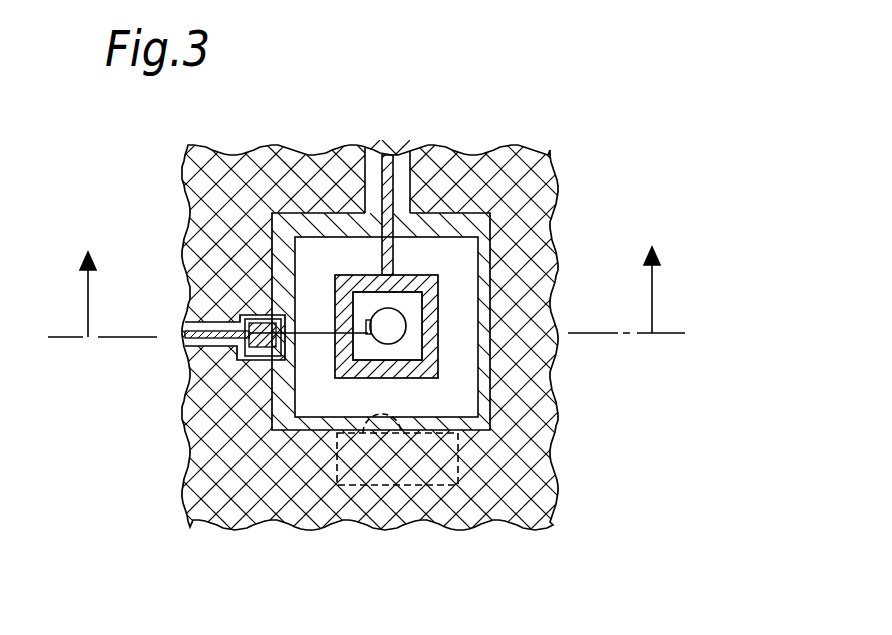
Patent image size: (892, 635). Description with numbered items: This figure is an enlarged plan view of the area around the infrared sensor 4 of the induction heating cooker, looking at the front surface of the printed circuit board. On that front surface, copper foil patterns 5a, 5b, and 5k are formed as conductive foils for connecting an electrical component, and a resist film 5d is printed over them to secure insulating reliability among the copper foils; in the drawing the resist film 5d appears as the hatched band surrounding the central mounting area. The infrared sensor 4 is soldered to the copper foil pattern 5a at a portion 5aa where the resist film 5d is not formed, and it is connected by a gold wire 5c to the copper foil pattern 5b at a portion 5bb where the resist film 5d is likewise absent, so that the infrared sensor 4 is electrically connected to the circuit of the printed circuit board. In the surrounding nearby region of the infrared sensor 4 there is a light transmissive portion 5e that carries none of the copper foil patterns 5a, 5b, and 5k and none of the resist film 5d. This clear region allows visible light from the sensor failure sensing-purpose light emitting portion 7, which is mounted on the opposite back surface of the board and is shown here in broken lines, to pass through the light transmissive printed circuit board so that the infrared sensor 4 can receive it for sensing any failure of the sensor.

The infrared sensor 4 is at (407, 348).
The copper foil pattern 5a is at (427, 275).
The portion where the resist film is not formed 5aa is at (427, 303).
The copper foil pattern 5b is at (262, 316).
The portion where the resist film is not formed 5bb is at (258, 340).
The gold wire 5c is at (307, 333).
The resist film 5d is at (474, 222).
The light transmissive portion 5e is at (463, 398).
The copper foil pattern 5k is at (540, 352).
The sensor failure sensing-purpose light emitting portion 7 is at (362, 485).